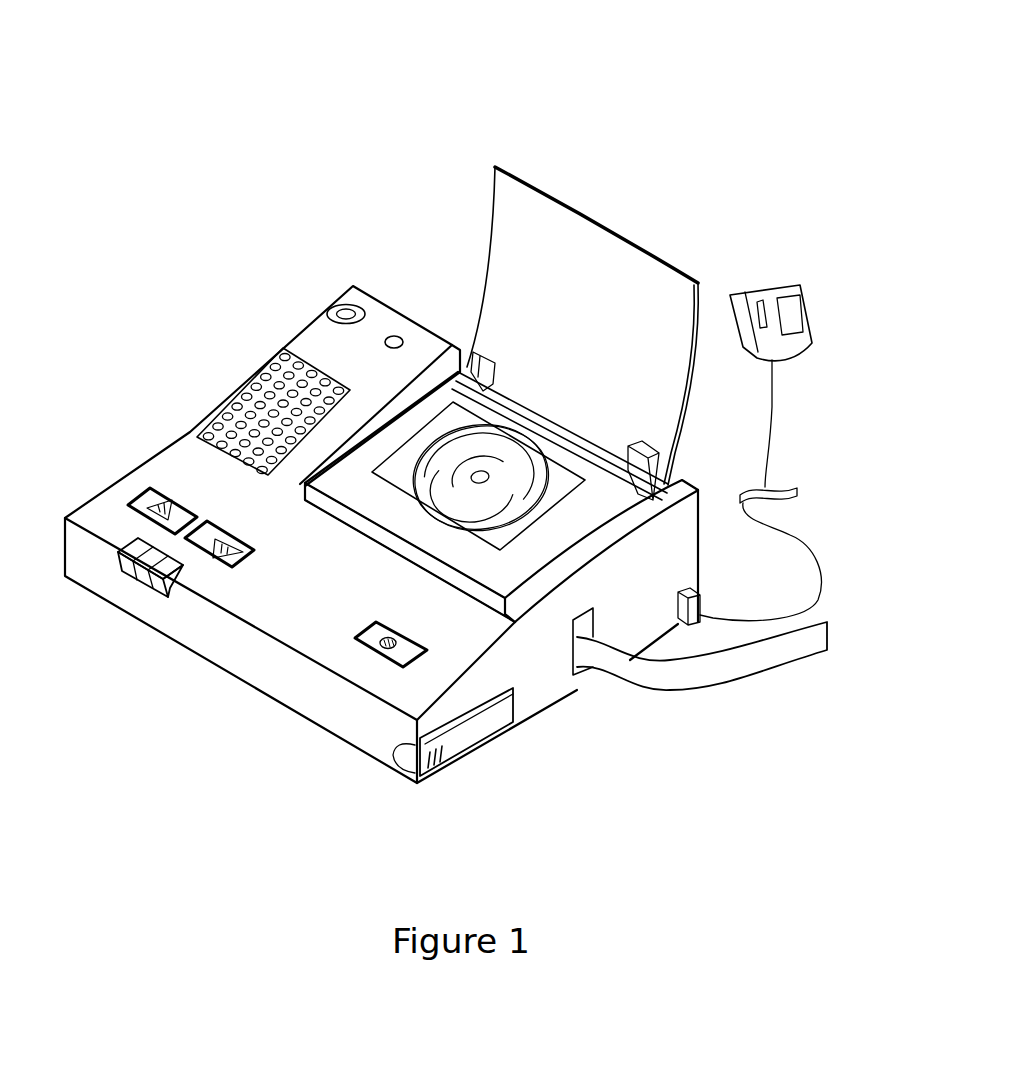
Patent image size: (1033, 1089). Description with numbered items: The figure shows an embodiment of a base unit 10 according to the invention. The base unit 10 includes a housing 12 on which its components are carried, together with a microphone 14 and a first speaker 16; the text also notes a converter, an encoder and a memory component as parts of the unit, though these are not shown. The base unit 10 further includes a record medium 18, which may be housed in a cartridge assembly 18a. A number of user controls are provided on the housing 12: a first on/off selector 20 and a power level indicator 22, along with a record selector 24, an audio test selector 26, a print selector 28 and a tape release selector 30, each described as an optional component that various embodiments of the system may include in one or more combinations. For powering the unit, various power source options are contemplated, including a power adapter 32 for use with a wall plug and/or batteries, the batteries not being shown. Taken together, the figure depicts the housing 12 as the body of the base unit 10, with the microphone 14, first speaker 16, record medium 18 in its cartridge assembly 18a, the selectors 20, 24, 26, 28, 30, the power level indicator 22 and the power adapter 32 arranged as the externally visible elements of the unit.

The base unit 10 is at (669, 90).
The housing 12 is at (327, 620).
The microphone 14 is at (140, 583).
The first speaker 16 is at (253, 385).
The record medium 18 is at (780, 657).
The cartridge assembly 18a is at (512, 578).
The first on/off selector 20 is at (343, 310).
The power level indicator 22 is at (393, 333).
The record selector 24 is at (147, 503).
The audio test selector 26 is at (225, 557).
The print selector 28 is at (382, 657).
The tape release selector 30 is at (463, 743).
The power adapter 32 is at (772, 407).